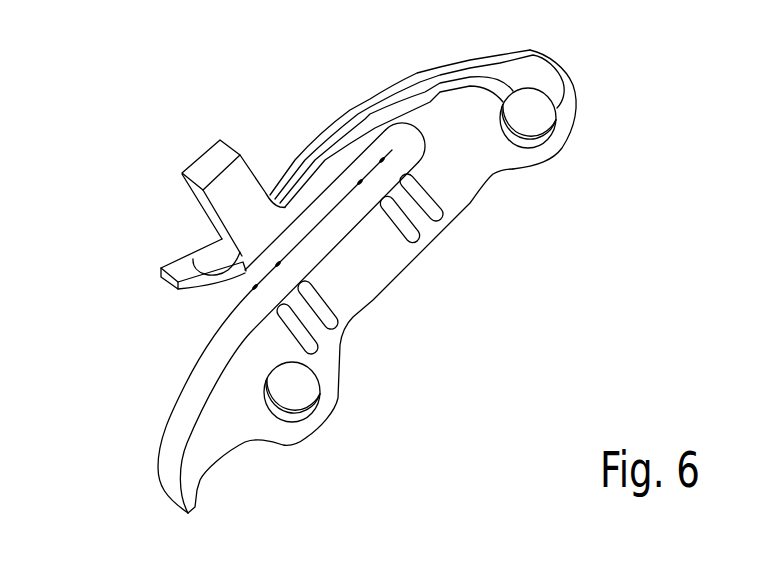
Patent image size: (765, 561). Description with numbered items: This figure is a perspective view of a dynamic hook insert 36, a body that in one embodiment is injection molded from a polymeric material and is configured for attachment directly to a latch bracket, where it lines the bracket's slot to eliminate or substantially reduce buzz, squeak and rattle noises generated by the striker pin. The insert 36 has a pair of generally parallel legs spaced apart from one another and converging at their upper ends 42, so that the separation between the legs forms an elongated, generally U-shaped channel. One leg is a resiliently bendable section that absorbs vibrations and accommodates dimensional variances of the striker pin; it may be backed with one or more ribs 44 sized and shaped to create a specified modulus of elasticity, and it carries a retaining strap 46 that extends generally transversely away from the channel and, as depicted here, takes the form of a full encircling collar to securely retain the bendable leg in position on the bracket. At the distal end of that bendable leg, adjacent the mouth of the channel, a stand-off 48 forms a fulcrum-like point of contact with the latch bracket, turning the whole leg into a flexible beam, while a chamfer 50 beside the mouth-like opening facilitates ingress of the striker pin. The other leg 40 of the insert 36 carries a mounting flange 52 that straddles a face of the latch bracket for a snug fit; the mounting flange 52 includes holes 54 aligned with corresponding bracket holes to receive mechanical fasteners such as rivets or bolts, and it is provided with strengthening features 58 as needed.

The dynamic hook insert 36 is at (453, 323).
The leg 40 is at (215, 353).
The upper ends 42 is at (403, 143).
The ribs 44 is at (342, 152).
The retaining strap 46 is at (208, 163).
The stand-off 48 is at (220, 255).
The chamfer 50 is at (197, 293).
The mounting flange 52 is at (523, 172).
The holes 54 is at (501, 101).
The strengthening features 58 is at (425, 200).